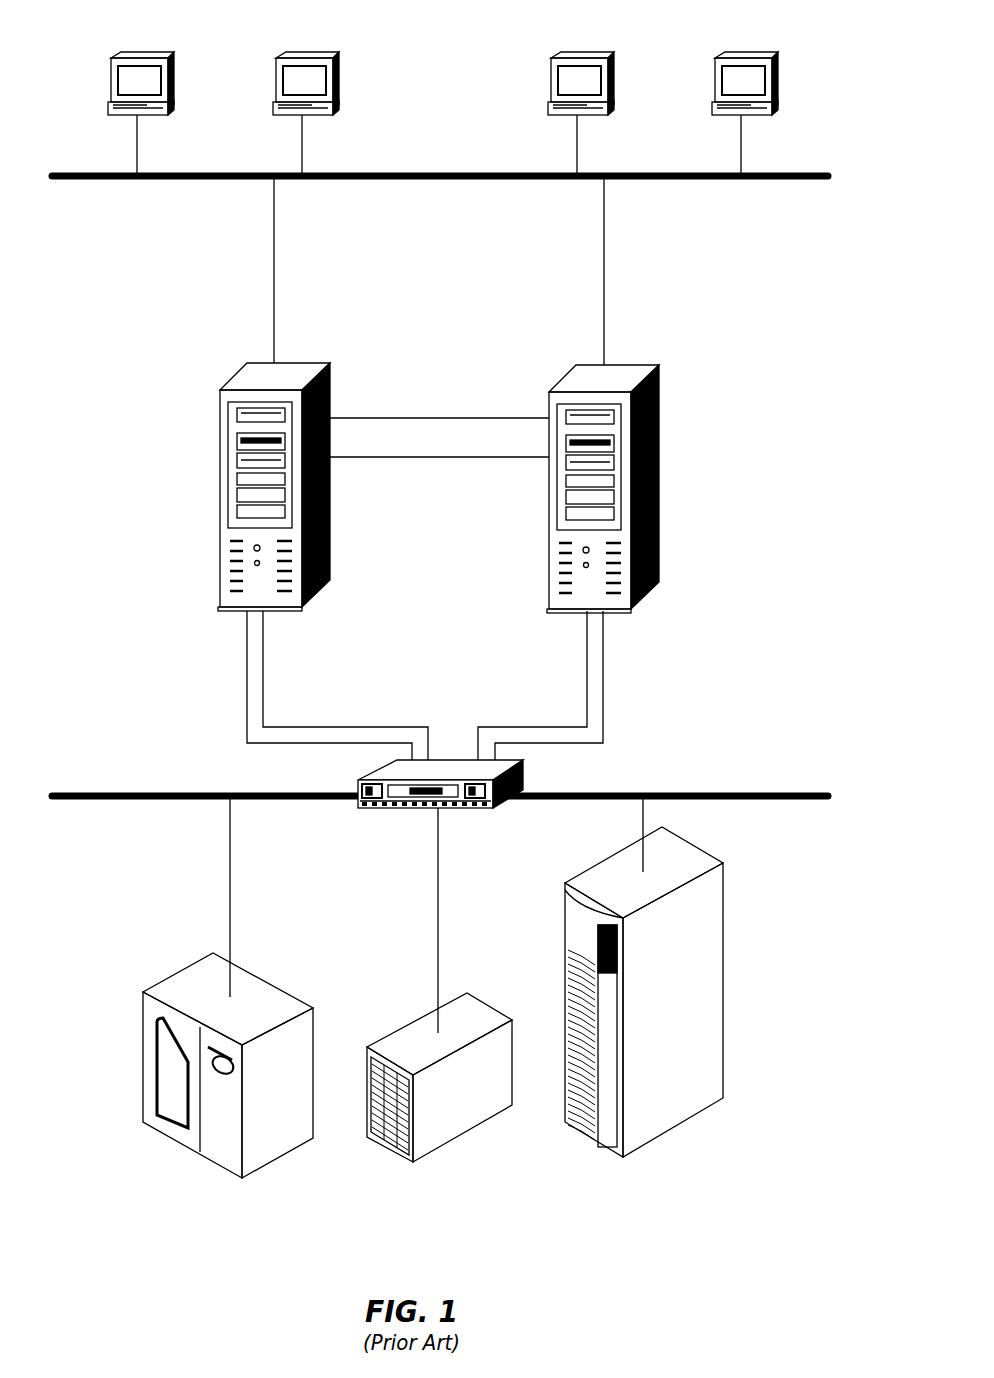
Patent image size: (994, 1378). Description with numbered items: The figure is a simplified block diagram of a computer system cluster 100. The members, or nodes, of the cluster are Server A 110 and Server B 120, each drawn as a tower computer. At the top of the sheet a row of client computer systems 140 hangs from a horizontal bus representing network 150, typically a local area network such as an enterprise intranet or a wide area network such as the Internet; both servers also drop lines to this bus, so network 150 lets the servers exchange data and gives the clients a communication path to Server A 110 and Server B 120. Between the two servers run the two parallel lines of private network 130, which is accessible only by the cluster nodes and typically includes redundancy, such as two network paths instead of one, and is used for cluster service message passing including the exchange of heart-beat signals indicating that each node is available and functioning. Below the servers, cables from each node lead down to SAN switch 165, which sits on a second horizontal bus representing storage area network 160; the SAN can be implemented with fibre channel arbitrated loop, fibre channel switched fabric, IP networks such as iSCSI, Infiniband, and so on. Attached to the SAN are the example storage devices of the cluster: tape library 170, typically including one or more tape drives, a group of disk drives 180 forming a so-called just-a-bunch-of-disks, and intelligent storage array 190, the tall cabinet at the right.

The cluster 100 is at (745, 1196).
The Server A 110 is at (220, 475).
The Server B 120 is at (660, 468).
The private network 130 is at (418, 417).
The client computer systems 140 is at (747, 56).
The network 150 is at (683, 179).
The storage area network (SAN) 160 is at (787, 800).
The SAN switch 165 is at (402, 810).
The tape library 170 is at (258, 995).
The group of disk drives 180 is at (460, 1002).
The intelligent storage array 190 is at (723, 973).